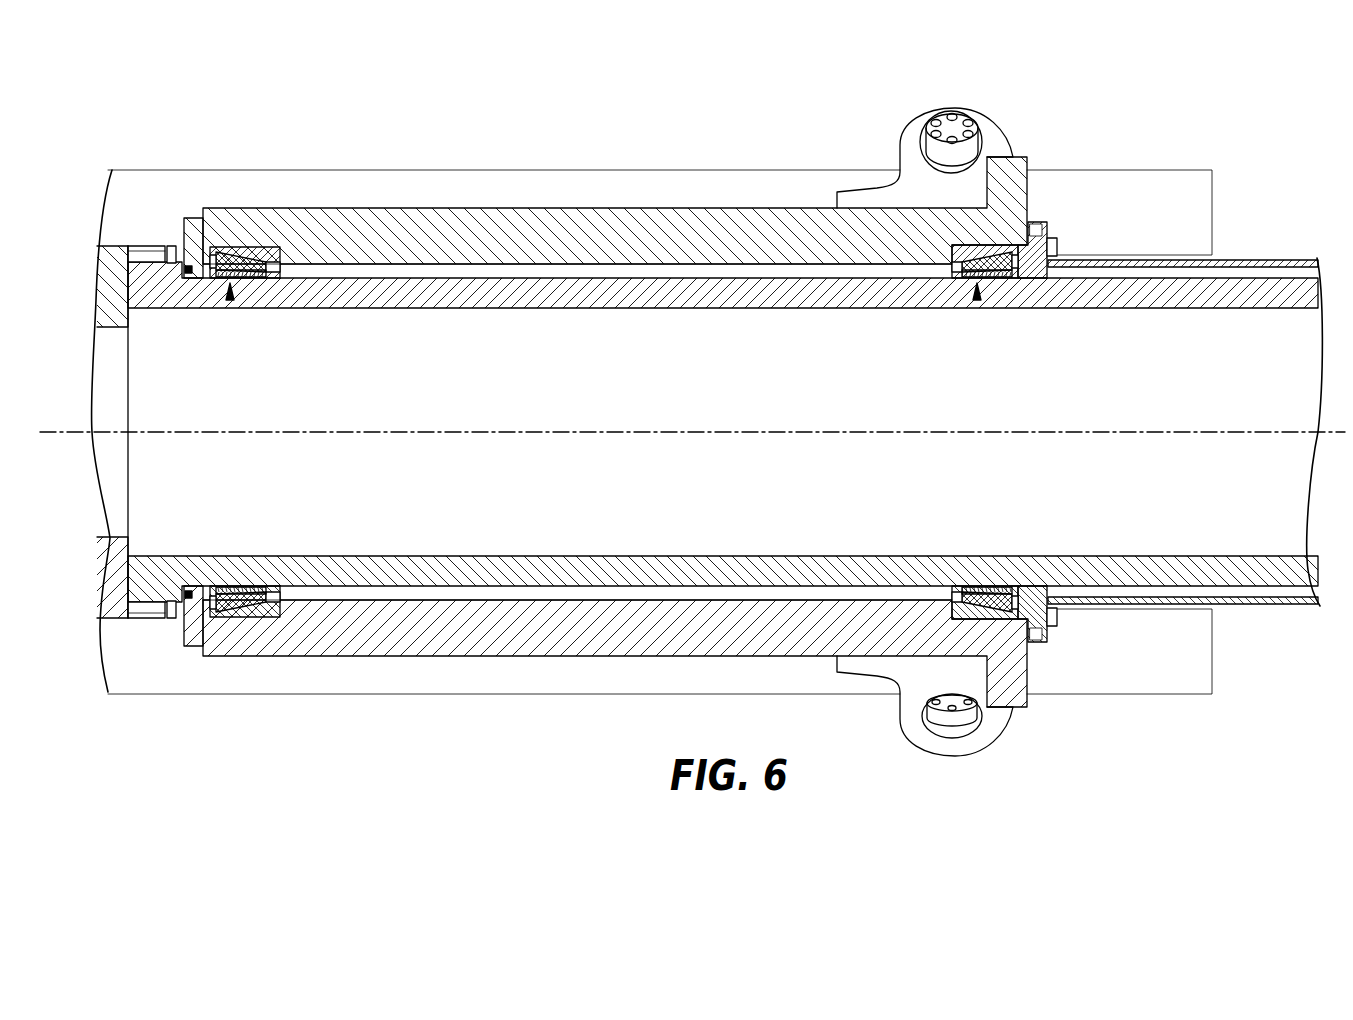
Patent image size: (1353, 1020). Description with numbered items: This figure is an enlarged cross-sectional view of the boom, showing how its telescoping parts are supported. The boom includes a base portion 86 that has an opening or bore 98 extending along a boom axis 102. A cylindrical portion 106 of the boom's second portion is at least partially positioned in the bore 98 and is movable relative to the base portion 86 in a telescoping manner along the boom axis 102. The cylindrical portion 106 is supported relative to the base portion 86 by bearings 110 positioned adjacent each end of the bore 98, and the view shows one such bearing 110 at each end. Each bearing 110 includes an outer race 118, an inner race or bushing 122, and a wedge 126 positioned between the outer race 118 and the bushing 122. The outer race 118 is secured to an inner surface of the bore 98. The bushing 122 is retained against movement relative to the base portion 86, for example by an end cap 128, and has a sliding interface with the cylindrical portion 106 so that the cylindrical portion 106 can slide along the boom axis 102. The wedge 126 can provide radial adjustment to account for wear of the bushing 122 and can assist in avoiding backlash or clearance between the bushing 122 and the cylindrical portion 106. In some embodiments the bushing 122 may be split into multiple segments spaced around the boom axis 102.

The base portion 86 is at (632, 238).
The bore 98 is at (512, 263).
The boom axis 102 is at (537, 432).
The cylindrical portion 106 is at (357, 290).
The bearing 110 is at (231, 300).
The outer race 118 is at (274, 252).
The inner race or bushing 122 is at (247, 273).
The wedge 126 is at (232, 248).
The end cap 128 is at (197, 223).